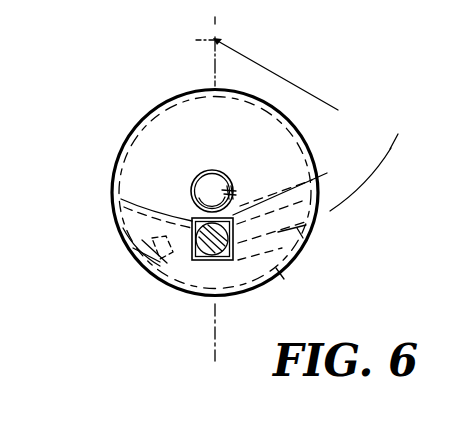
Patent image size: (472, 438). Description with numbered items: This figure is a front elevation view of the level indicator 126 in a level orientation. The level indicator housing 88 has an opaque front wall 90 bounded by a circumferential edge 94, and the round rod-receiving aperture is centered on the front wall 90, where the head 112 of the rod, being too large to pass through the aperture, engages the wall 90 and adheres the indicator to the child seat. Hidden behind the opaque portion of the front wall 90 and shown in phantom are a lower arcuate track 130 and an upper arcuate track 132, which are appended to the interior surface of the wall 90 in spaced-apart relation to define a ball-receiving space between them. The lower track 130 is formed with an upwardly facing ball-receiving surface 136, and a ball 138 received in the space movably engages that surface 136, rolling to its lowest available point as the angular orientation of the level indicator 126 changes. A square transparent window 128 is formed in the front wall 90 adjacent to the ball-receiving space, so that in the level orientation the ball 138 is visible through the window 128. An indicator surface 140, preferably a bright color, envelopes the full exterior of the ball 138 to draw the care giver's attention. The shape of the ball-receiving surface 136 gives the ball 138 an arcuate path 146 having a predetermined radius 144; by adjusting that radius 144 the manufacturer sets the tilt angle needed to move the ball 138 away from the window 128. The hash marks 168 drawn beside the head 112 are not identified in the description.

The level indicator 126 is at (146, 77).
The level indicator housing 88 is at (129, 119).
The front wall 90 is at (143, 147).
The upper arcuate track 132 is at (131, 169).
The head 112 is at (210, 188).
The knurled marks 168 is at (237, 192).
The radius 144 is at (385, 138).
The indicator surface 140 is at (312, 179).
The arcuate path 146 is at (310, 234).
The lower arcuate track 130 is at (283, 272).
The ball 138 is at (220, 255).
The transparent window 128 is at (205, 246).
The circumferential edge 94 is at (163, 284).
The ball-receiving surface 136 is at (168, 245).